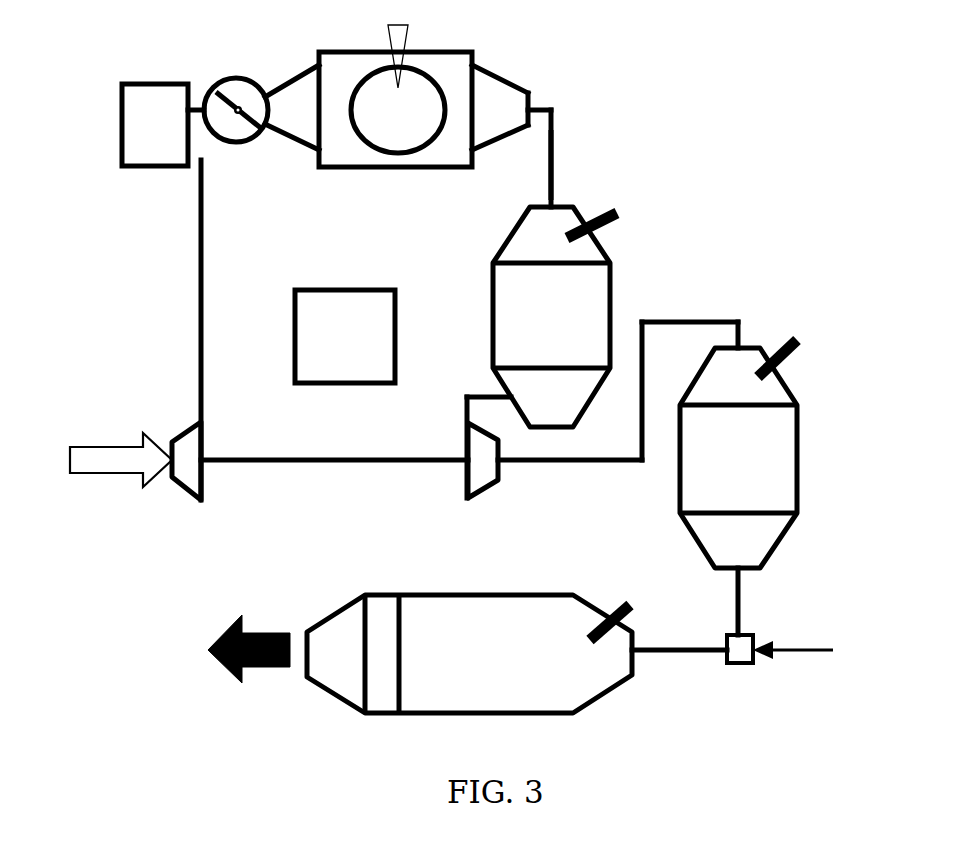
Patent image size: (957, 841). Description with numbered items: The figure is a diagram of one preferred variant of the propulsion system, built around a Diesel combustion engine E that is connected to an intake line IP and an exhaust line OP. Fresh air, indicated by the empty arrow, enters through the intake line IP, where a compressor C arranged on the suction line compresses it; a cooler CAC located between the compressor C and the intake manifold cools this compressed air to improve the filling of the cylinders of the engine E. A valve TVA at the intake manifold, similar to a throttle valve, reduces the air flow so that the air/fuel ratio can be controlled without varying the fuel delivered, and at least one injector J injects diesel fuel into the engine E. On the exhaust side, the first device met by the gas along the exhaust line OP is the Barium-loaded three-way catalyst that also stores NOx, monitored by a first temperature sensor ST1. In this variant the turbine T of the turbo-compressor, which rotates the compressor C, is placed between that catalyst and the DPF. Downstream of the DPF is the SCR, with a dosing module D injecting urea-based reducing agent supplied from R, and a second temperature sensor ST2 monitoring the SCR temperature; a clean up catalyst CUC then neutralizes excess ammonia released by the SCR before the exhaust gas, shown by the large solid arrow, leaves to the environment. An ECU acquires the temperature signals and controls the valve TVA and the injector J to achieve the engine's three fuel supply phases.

The cooler CAC is at (155, 125).
The intake line IP is at (200, 313).
The valve TVA is at (211, 64).
The compressor C is at (190, 492).
The Diesel combustion engine E is at (377, 157).
The injector J is at (408, 38).
The exhaust line OP is at (557, 162).
The turbine T is at (468, 500).
The element DPF is at (738, 458).
The first temperature sensor ST1 is at (617, 213).
The element SCR is at (469, 654).
The Clean Up Catalyst CUC is at (388, 654).
The second temperature sensor ST2 is at (630, 605).
The dosing module D is at (717, 667).
The reductant supply R is at (803, 653).
The ECU processing unit ECU is at (345, 336).